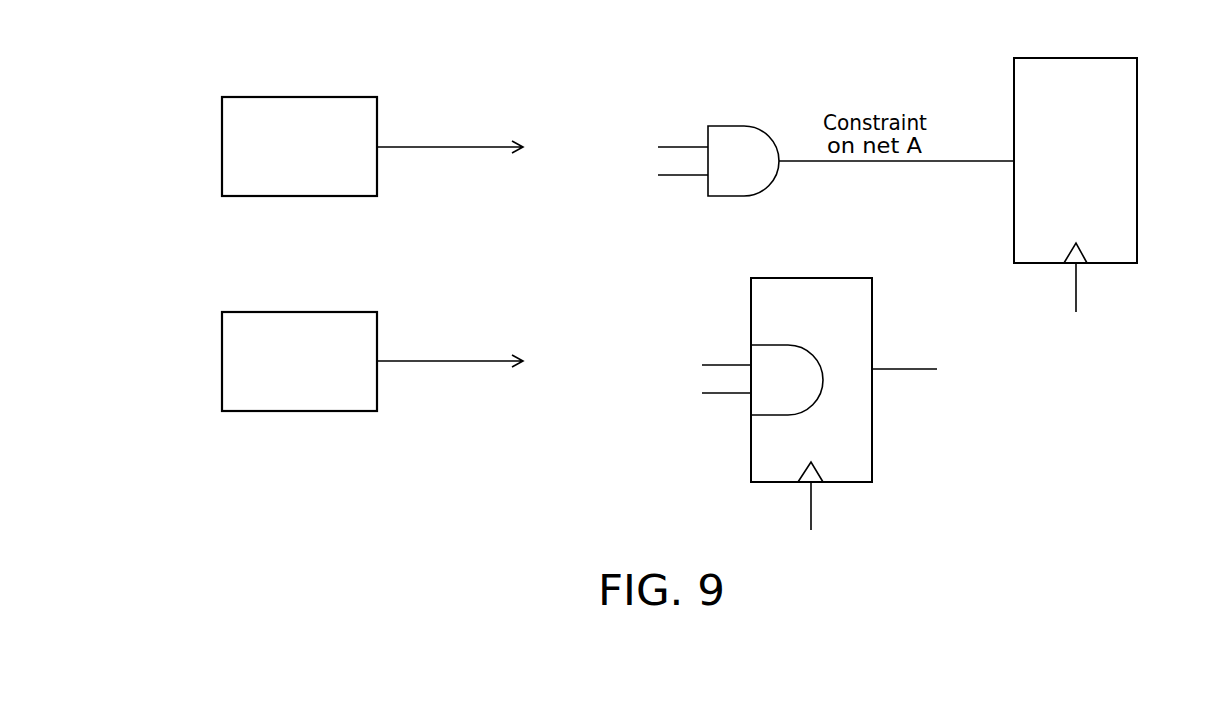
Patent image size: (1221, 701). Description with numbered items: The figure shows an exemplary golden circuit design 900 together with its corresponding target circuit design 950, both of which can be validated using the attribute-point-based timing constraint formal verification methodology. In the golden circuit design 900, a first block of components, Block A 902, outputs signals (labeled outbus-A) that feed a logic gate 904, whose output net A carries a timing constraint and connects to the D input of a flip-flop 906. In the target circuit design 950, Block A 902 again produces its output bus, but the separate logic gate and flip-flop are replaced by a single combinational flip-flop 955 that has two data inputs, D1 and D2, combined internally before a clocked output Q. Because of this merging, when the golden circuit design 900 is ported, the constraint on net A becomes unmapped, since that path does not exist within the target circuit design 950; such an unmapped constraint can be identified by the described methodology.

The golden circuit design 900 is at (198, 71).
The Block A 902 is at (300, 97).
The logic gate 904 is at (747, 125).
The flip-flop 906 is at (1137, 103).
The target circuit design 950 is at (198, 285).
The combinational flip-flop 955 is at (872, 322).